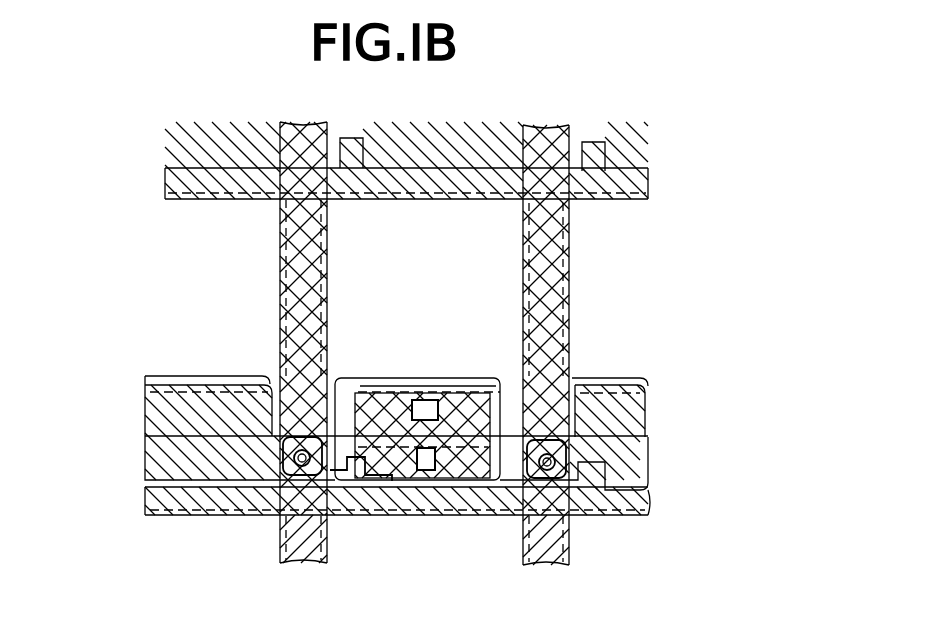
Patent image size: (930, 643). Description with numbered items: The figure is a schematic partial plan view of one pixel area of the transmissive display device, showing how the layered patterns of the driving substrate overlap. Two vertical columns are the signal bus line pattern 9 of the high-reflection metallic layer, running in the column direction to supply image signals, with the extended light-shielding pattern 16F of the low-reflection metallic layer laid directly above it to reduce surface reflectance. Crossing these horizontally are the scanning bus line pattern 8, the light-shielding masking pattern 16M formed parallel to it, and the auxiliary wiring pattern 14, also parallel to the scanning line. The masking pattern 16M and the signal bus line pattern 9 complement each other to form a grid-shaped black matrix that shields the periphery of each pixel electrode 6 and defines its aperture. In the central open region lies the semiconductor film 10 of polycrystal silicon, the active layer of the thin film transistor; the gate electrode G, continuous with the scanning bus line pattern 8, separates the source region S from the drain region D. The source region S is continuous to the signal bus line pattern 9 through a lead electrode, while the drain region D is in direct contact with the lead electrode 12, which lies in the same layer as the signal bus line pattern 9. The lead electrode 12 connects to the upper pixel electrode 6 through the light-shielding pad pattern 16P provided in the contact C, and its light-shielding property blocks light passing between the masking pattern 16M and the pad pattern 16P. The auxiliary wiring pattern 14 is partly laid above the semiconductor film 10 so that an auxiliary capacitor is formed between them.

The signal bus line pattern 9 is at (556, 124).
The extended light-shielding pattern 16F is at (298, 273).
The pixel electrode 6 is at (445, 276).
The semiconductor film 10 is at (360, 378).
The lead electrode 12 is at (490, 486).
The light-shielding pad pattern 16P is at (464, 393).
The contact C is at (418, 398).
The drain region D is at (430, 478).
The source region S is at (265, 486).
The gate electrode G is at (349, 482).
The auxiliary wiring pattern 14 is at (640, 416).
The light-shielding masking pattern 16M is at (637, 470).
The scanning bus line pattern 8 is at (650, 509).